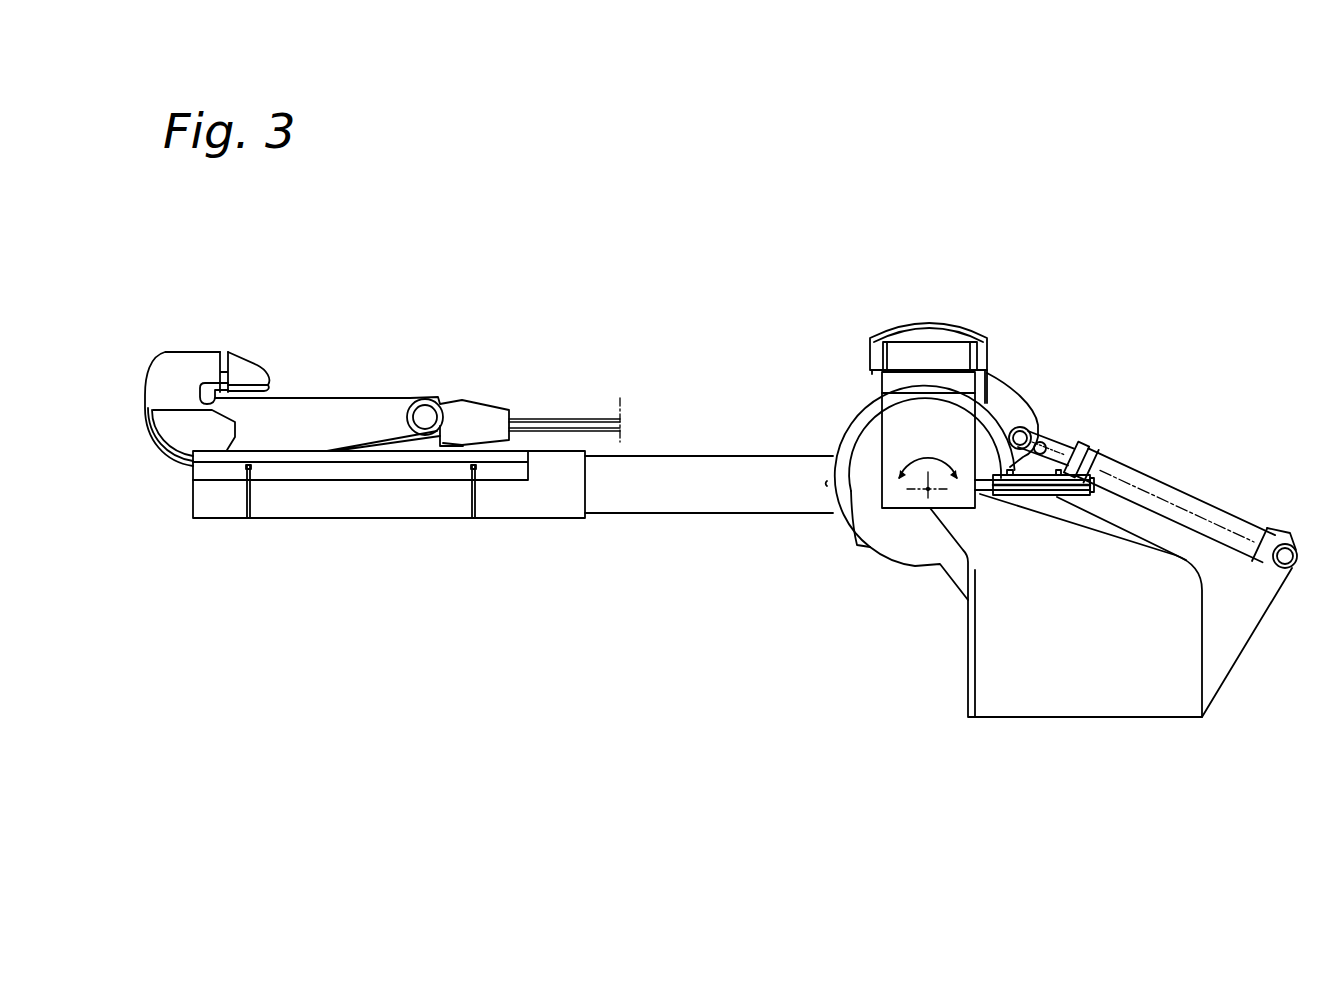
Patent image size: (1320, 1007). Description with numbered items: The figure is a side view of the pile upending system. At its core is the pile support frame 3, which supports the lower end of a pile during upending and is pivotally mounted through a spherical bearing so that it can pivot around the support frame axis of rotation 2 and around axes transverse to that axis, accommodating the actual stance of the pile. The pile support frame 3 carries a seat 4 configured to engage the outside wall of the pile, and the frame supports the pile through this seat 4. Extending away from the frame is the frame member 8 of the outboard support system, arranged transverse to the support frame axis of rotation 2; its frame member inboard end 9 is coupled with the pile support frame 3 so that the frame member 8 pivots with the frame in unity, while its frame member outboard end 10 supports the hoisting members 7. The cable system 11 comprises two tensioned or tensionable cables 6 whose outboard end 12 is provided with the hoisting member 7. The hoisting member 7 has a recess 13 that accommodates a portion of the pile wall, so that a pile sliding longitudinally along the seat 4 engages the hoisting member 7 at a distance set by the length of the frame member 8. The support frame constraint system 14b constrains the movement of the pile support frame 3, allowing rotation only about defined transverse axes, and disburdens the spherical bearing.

The support frame axis of rotation 2 is at (928, 497).
The pile support frame 3 is at (992, 326).
The seat 4 is at (930, 321).
The cables 6 is at (605, 417).
The hoisting member 7 is at (148, 367).
The frame member 8 is at (709, 503).
The frame member inboard end 9 is at (757, 480).
The frame member outboard end 10 is at (222, 503).
The cable system 11 is at (562, 400).
The outboard end 12 is at (518, 415).
The recess 13 is at (267, 393).
The support frame constraint system 14b is at (843, 542).